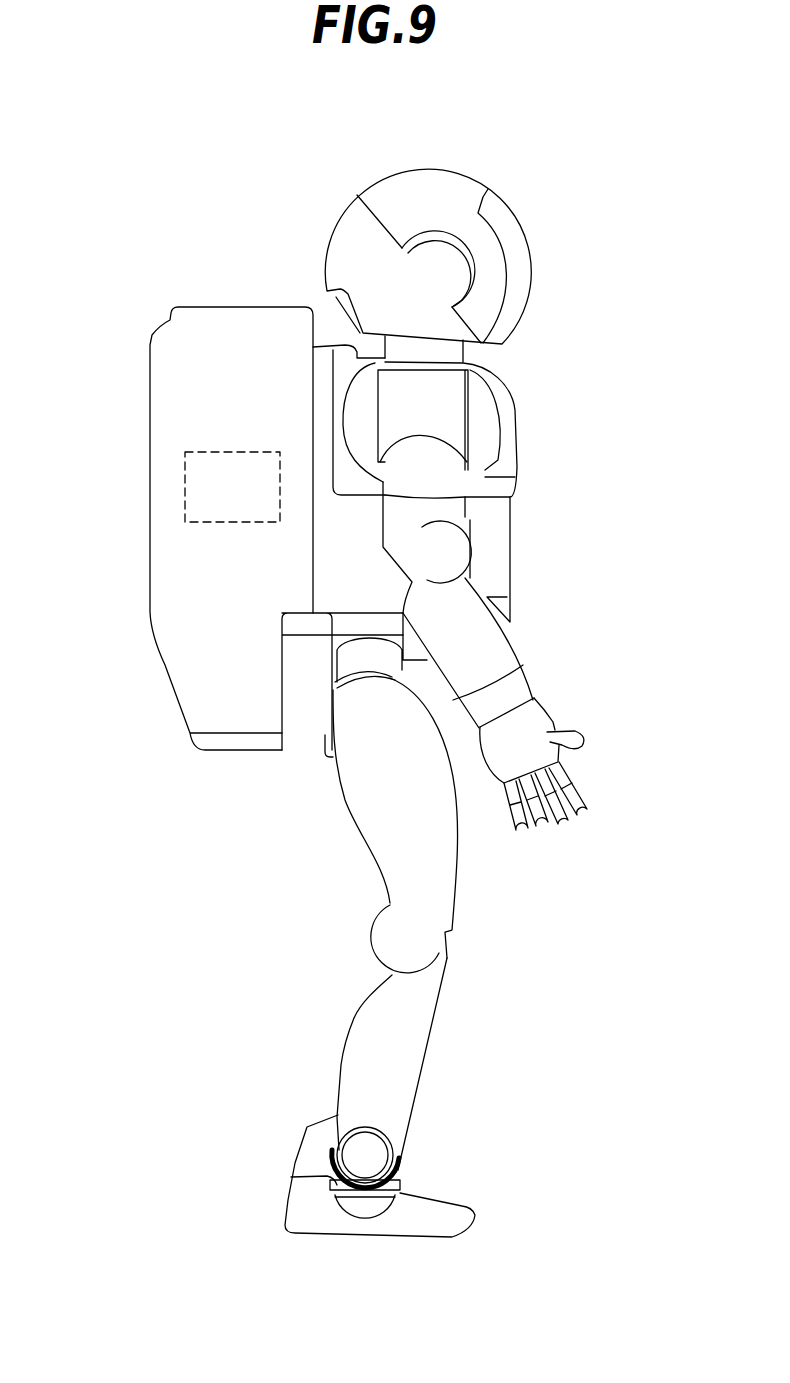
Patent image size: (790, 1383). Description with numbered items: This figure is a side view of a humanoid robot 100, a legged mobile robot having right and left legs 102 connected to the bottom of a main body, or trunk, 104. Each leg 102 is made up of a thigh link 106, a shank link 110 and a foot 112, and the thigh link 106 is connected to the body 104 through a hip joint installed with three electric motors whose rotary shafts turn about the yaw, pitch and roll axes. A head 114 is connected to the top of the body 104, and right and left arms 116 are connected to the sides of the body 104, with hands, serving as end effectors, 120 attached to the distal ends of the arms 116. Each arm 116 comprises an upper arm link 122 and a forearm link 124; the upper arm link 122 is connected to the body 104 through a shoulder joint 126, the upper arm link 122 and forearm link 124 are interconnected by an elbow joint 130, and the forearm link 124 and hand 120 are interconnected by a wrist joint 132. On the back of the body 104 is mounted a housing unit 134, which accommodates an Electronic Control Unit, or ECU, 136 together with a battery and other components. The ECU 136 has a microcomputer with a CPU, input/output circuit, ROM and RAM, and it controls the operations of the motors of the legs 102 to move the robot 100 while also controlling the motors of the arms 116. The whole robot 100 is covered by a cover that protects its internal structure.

The robot 100 is at (536, 401).
The legs 102 is at (427, 954).
The main body (trunk) 104 is at (498, 537).
The thigh link 106 is at (465, 898).
The shank link 110 is at (422, 1092).
The foot 112 is at (458, 1200).
The head 114 is at (397, 168).
The arms (links) 116 is at (495, 642).
The hand (end effector) 120 is at (535, 742).
The upper arm link 122 is at (470, 510).
The forearm link 124 is at (510, 630).
The shoulder joint 126 is at (430, 392).
The elbow joint 130 is at (437, 555).
The wrist joint 132 is at (518, 722).
The housing unit 134 is at (225, 307).
The Electronic Control Unit (ECU) 136 is at (185, 490).